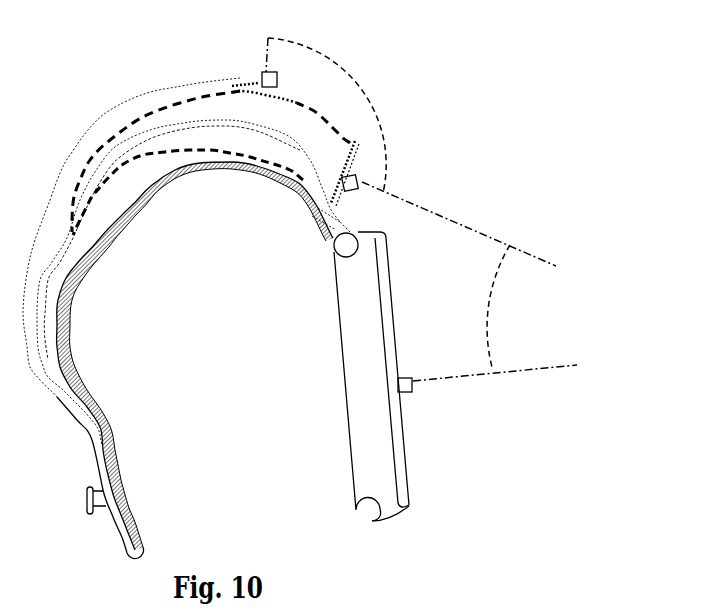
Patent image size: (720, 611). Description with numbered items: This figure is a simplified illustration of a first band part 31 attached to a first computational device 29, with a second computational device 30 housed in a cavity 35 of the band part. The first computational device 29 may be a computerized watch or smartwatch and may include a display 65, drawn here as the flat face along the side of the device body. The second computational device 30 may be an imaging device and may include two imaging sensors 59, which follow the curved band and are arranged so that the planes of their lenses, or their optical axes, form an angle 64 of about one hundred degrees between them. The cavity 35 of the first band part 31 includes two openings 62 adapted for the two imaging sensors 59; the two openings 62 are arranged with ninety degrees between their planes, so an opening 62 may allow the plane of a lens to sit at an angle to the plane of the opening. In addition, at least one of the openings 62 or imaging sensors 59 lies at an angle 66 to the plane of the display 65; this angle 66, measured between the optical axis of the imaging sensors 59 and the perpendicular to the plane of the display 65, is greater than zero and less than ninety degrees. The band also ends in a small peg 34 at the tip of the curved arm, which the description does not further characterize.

The first computational device 29 is at (341, 365).
The second computational device 30 is at (238, 154).
The first band part 31 is at (67, 352).
The end peg 34 is at (129, 497).
The cavity 35 is at (187, 177).
The imaging sensors 59 is at (283, 95).
The openings 62 is at (231, 84).
The angle 64 is at (362, 97).
The display 65 is at (398, 343).
The angle 66 is at (489, 310).